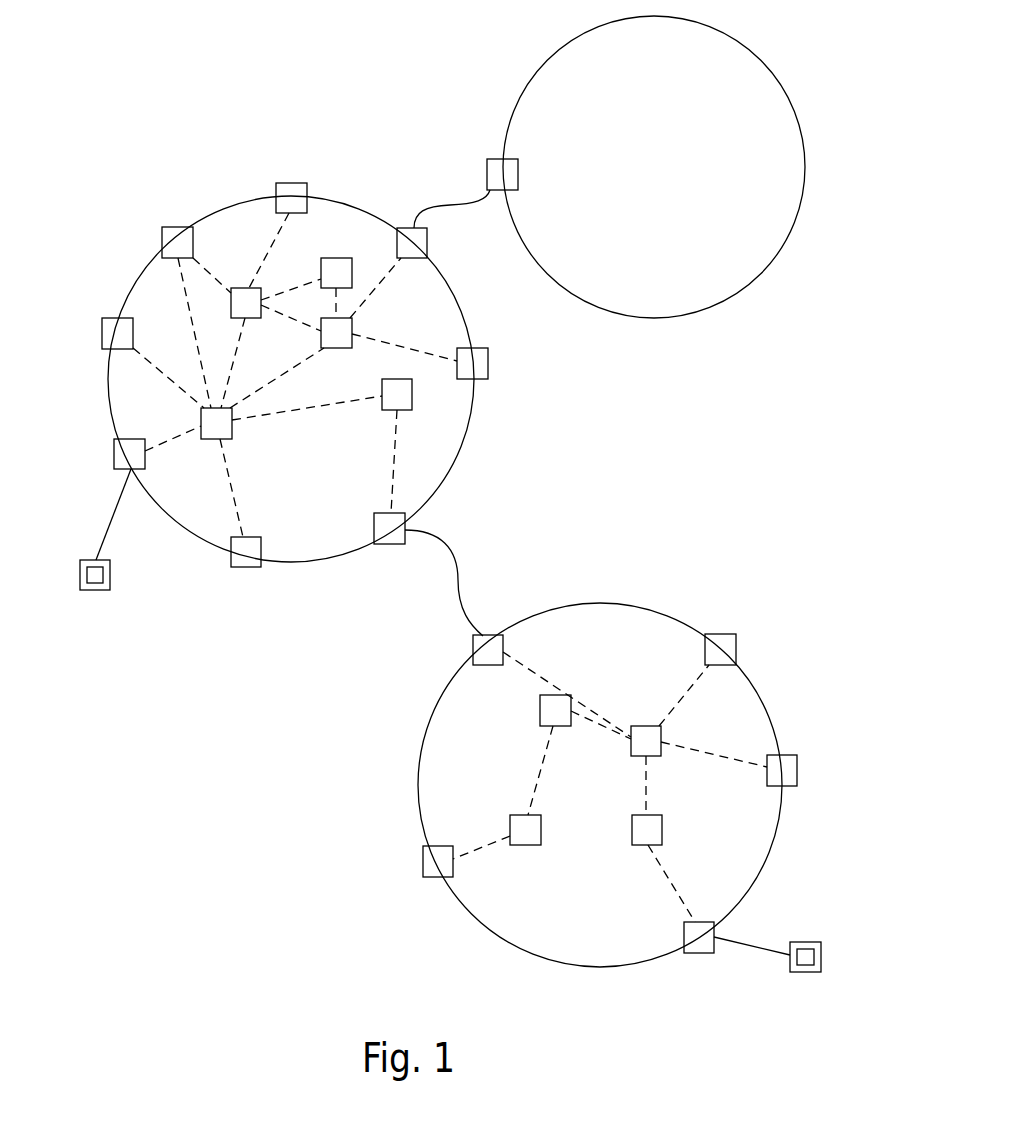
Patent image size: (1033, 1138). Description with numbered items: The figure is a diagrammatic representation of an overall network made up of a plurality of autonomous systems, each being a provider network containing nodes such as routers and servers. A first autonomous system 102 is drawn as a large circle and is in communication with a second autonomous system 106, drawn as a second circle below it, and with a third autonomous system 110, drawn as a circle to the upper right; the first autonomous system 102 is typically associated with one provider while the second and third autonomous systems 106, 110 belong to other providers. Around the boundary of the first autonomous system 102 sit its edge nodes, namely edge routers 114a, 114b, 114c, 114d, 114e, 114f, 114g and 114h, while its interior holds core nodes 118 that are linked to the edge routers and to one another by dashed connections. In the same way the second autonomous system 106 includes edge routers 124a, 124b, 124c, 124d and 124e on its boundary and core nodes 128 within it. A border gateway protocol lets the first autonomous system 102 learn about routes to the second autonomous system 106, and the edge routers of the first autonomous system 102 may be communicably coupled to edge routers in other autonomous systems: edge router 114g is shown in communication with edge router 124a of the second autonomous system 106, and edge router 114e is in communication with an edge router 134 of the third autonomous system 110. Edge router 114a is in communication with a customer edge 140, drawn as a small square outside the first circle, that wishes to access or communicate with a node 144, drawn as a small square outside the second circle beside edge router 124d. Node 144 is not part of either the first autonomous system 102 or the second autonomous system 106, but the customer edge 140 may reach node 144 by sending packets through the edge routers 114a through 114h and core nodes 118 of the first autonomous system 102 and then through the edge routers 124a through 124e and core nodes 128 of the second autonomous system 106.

The first autonomous system 102 is at (117, 176).
The second autonomous system 106 is at (303, 747).
The third autonomous system 110 is at (474, 29).
The edge router 114a is at (116, 452).
The edge router 114b is at (112, 318).
The edge router 114c is at (178, 227).
The edge router 114d is at (290, 183).
The edge router 114e is at (427, 243).
The edge router 114f is at (488, 361).
The edge router 114g is at (390, 544).
The edge router 114h is at (246, 567).
The core node 118 is at (336, 258).
The edge router 124a is at (473, 646).
The edge router 124b is at (722, 634).
The edge router 124c is at (786, 755).
The edge router 124d is at (700, 953).
The edge router 124e is at (423, 857).
The core node 128 is at (546, 701).
The edge router 134 is at (494, 159).
The customer edge 140 is at (96, 590).
The node 144 is at (806, 972).